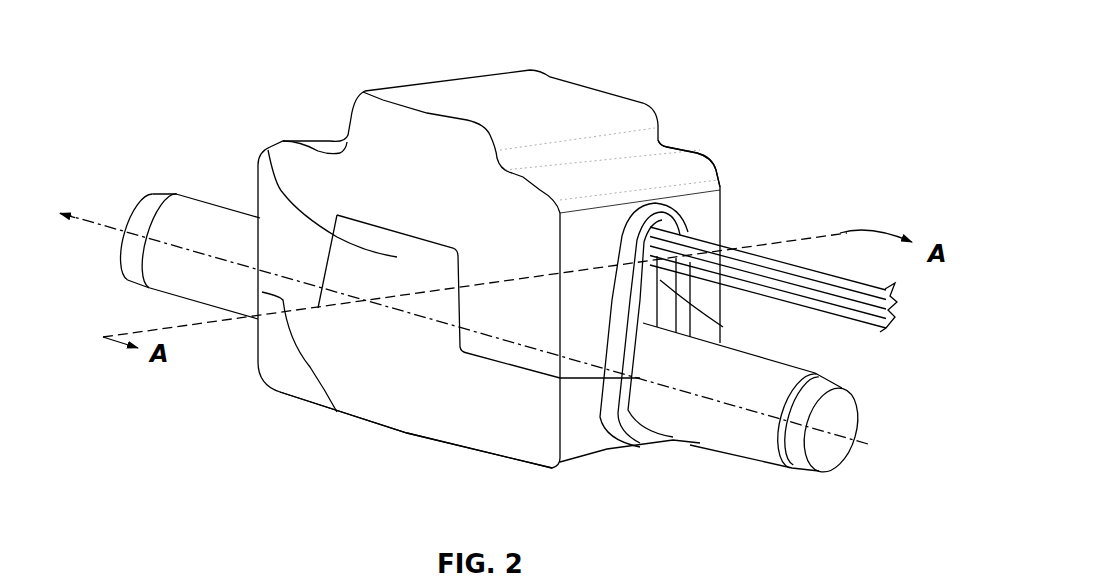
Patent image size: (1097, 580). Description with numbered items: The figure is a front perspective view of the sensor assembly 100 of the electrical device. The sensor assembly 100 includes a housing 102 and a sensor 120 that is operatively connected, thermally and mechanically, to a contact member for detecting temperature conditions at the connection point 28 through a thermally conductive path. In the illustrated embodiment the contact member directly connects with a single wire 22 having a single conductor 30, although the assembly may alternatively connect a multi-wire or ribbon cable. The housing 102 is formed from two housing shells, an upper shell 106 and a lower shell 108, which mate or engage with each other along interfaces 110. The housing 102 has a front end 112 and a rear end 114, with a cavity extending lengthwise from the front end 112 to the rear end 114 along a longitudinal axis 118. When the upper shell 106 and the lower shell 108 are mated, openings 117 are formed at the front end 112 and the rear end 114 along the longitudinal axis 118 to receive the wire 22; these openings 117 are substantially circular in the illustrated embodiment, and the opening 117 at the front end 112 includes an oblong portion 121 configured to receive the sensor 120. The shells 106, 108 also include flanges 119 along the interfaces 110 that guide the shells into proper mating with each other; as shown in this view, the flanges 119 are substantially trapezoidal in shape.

The sensor assembly 100 is at (547, 267).
The housing 102 is at (583, 74).
The upper shell 106 is at (592, 92).
The lower shell 108 is at (403, 433).
The interfaces 110 is at (337, 412).
The front end 112 is at (713, 144).
The rear end 114 is at (329, 113).
The openings 117 is at (623, 440).
The longitudinal axis 118 is at (88, 220).
The flanges 119 is at (268, 150).
The sensor 120 is at (807, 253).
The oblong portion 121 is at (723, 327).
The wire 22 is at (750, 461).
The connection point 28 is at (212, 189).
The conductor 30 is at (840, 450).